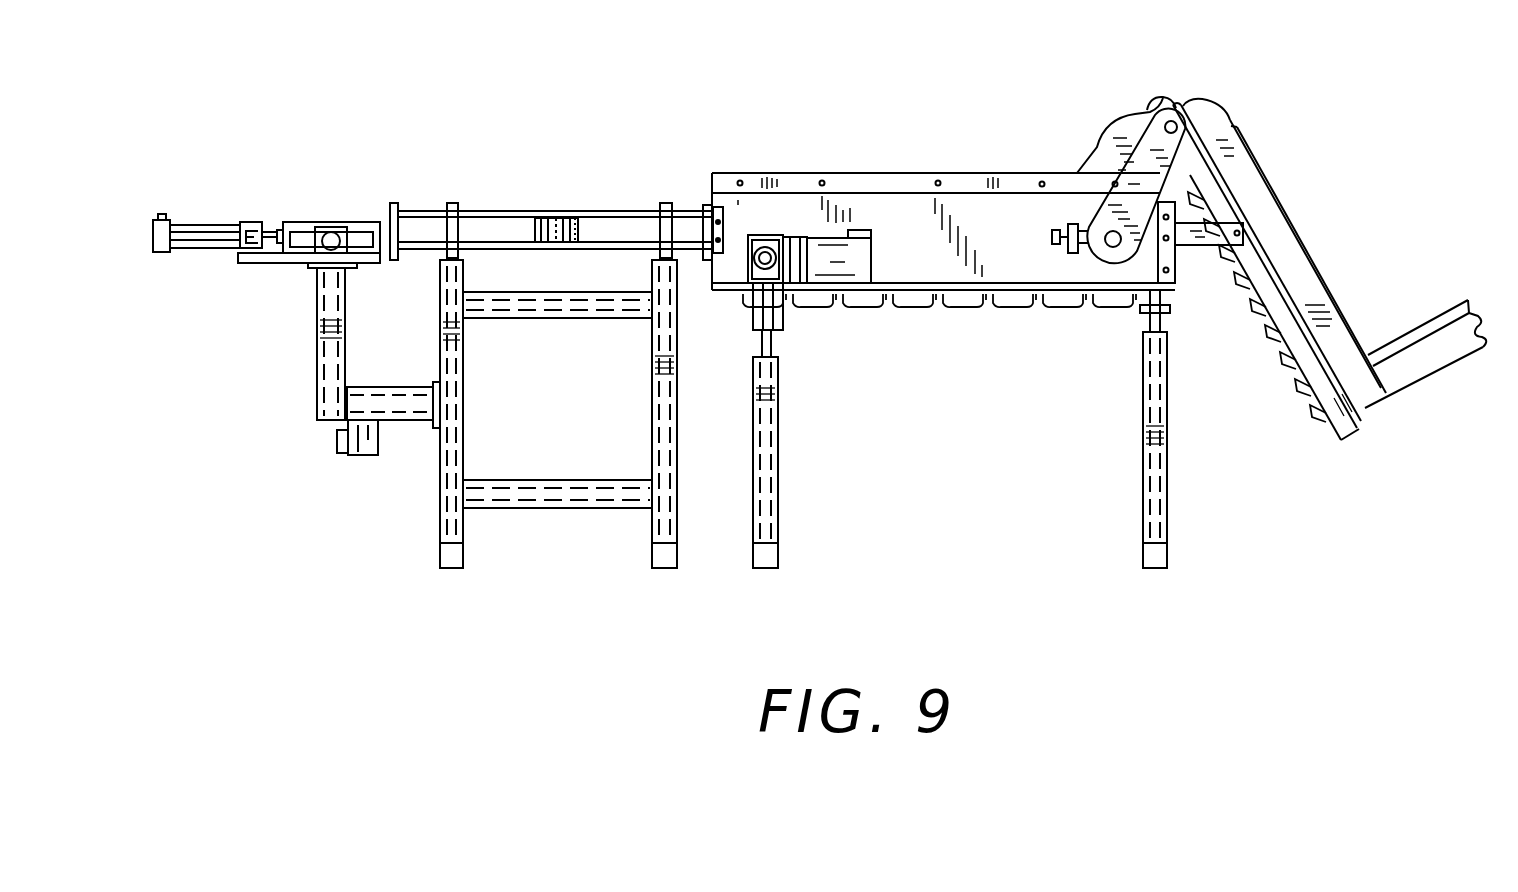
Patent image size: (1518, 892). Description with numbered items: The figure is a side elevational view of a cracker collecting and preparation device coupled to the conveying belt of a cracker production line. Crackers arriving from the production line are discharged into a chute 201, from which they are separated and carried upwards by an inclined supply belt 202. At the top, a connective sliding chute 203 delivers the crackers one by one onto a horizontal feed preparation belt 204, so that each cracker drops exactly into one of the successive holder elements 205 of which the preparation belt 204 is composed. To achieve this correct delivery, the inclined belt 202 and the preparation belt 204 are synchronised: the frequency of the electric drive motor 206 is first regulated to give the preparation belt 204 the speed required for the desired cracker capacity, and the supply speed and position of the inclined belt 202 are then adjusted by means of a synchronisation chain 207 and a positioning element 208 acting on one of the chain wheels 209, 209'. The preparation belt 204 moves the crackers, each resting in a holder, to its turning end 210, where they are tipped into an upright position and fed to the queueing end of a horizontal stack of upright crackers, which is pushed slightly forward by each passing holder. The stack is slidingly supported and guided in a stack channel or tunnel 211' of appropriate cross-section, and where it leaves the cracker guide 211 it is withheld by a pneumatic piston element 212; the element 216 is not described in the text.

The chute 201 is at (1428, 350).
The inclined supply belt 202 is at (1298, 302).
The connective sliding chute 203 is at (1134, 133).
The horizontal feed preparation belt 204 is at (918, 290).
The holder elements 205 is at (957, 307).
The electric drive motor 206 is at (818, 262).
The synchronisation chain 207 is at (1163, 182).
The positioning element 208 is at (1060, 246).
The chain wheel 209 is at (1102, 324).
The chain wheel 209' is at (1218, 86).
The turning end 210 is at (704, 208).
The cracker guide 211 is at (551, 182).
The stack channel or tunnel 211' is at (581, 173).
The pneumatic piston element 212 is at (213, 254).
The slide base 216 is at (310, 221).